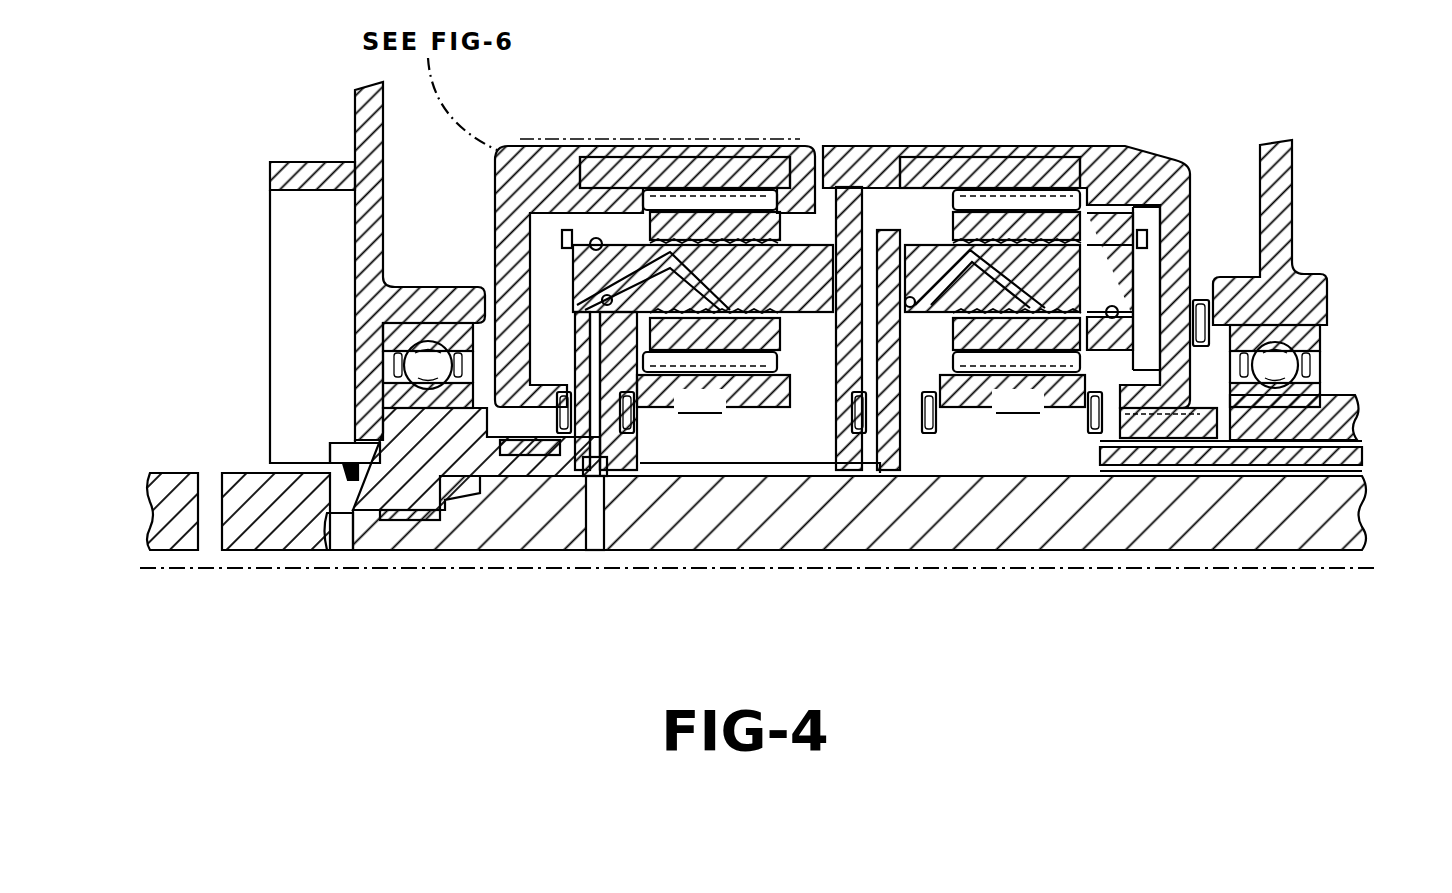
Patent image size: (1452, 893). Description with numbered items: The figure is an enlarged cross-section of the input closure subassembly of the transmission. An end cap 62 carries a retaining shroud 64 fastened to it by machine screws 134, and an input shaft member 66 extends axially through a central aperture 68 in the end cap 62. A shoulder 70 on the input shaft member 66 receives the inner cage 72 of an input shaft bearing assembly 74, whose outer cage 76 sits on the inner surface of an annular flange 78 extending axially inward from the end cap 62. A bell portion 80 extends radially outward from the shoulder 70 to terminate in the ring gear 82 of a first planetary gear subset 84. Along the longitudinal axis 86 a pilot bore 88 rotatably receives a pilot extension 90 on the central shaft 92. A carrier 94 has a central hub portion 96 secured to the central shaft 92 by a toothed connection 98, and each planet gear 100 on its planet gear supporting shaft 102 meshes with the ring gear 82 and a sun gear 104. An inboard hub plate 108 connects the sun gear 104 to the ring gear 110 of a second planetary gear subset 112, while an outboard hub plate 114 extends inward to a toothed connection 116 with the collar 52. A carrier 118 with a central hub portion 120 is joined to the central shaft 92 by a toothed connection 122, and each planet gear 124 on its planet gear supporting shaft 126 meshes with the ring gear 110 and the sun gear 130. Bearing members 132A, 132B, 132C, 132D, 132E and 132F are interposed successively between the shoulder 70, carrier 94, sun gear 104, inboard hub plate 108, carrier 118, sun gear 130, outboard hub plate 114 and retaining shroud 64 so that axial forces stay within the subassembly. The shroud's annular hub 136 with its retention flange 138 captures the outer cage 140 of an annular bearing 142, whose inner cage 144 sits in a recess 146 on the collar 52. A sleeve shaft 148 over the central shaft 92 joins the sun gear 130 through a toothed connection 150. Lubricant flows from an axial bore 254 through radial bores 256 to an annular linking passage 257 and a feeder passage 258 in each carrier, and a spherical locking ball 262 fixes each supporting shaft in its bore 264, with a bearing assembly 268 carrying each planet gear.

The collar 52 is at (1235, 460).
The end cap 62 is at (360, 118).
The retaining shroud 64 is at (1282, 150).
The input shaft member 66 is at (178, 528).
The central aperture 68 is at (272, 530).
The shoulder 70 is at (418, 455).
The inner cage 72 is at (397, 400).
The input shaft bearing assembly 74 is at (450, 316).
The outer cage 76 is at (400, 335).
The annular flange 78 is at (420, 305).
The bell portion 80 is at (520, 275).
The ring gear 82 is at (660, 175).
The first planetary gear subset 84 is at (722, 144).
The longitudinal axis 86 is at (225, 555).
The pilot bore 88 is at (335, 485).
The pilot extension 90 is at (345, 525).
The central shaft 92 is at (1263, 533).
The carrier 94 is at (575, 355).
The central hub portion 96 is at (497, 440).
The toothed connection 98 is at (522, 440).
The planet gear 100 is at (765, 210).
The planet gear supporting shaft 102 is at (803, 245).
The sun gear 104 is at (713, 366).
The inboard hub plate 108 is at (852, 263).
The ring gear 110 is at (945, 165).
The second planetary gear subset 112 is at (1163, 142).
The outboard hub plate 114 is at (1193, 212).
The toothed connection 116 is at (1143, 418).
The carrier 118 is at (740, 465).
The central hub portion 120 is at (820, 450).
The toothed connection 122 is at (855, 470).
The planet gear 124 is at (1060, 212).
The planet gear supporting shaft 126 is at (1092, 262).
The sun gear 130 is at (1012, 366).
The bearing member 132A is at (460, 440).
The second bearing member 132B is at (627, 433).
The third bearing member 132C is at (905, 455).
The fourth bearing member 132D is at (938, 440).
The fifth bearing member 132E is at (1100, 435).
The sixth bearing member 132F is at (1217, 340).
The machine screws 134 is at (378, 540).
The annular hub 136 is at (1312, 342).
The retention flange 138 is at (1320, 310).
The outer cage 140 is at (1313, 363).
The annular bearing 142 is at (1257, 432).
The inner cage 144 is at (1285, 410).
The recess 146 is at (1222, 400).
The sleeve shaft 148 is at (1245, 495).
The toothed connection 150 is at (1018, 445).
The axial bore 254 is at (1322, 560).
The radial bores 256 is at (598, 525).
The annular linking passage 257 is at (580, 460).
The feeder passage 258 is at (903, 350).
The spherical locking ball 262 is at (597, 238).
The bore 264 is at (567, 230).
The bearing assembly 268 is at (692, 228).